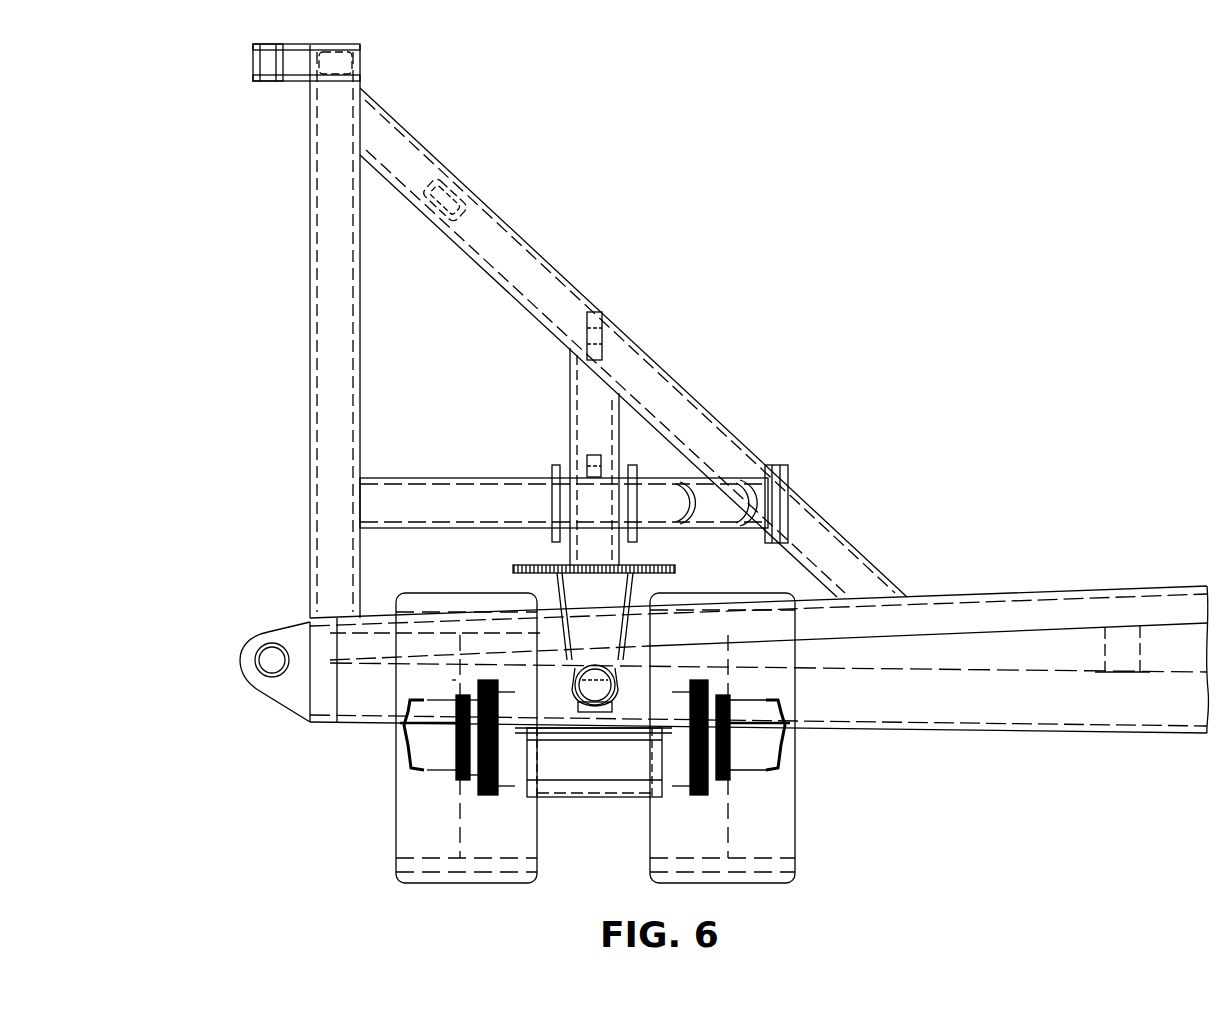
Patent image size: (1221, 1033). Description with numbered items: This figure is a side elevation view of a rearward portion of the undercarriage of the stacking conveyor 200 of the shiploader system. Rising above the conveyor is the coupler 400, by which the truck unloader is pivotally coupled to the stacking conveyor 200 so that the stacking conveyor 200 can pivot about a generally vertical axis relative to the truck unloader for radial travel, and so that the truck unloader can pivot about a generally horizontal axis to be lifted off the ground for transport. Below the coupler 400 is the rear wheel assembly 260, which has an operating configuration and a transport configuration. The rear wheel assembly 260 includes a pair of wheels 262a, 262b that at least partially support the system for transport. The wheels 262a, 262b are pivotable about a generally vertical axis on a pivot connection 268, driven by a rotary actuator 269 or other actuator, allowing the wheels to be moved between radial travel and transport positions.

The stacking conveyor 200 is at (724, 388).
The coupler 400 is at (477, 192).
The pivot connection 268 is at (531, 558).
The rotary actuator 269 is at (528, 555).
The rear wheel assembly 260 is at (656, 756).
The wheel 262a is at (394, 777).
The wheel 262b is at (828, 892).